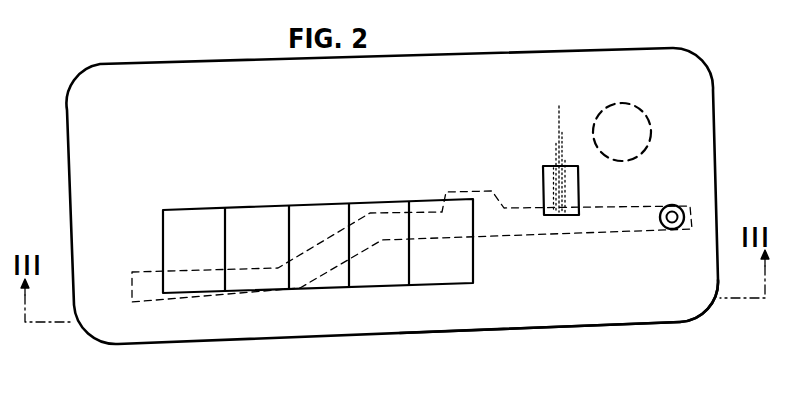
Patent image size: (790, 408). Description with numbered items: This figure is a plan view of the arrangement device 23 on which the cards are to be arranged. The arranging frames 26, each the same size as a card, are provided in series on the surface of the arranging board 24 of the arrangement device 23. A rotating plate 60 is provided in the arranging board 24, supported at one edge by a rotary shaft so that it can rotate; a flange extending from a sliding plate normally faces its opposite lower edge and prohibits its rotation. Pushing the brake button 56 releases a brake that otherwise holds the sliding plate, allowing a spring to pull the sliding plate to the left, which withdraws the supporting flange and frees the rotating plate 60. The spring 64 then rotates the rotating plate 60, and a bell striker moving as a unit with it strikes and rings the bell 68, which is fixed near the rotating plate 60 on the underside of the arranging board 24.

The arrangement device 23 is at (229, 349).
The arranging board 24 is at (645, 304).
The arranging frames 26 is at (433, 285).
The brake button 56 is at (683, 204).
The rotating plate 60 is at (563, 216).
The spring 64 is at (562, 134).
The bell 68 is at (634, 105).